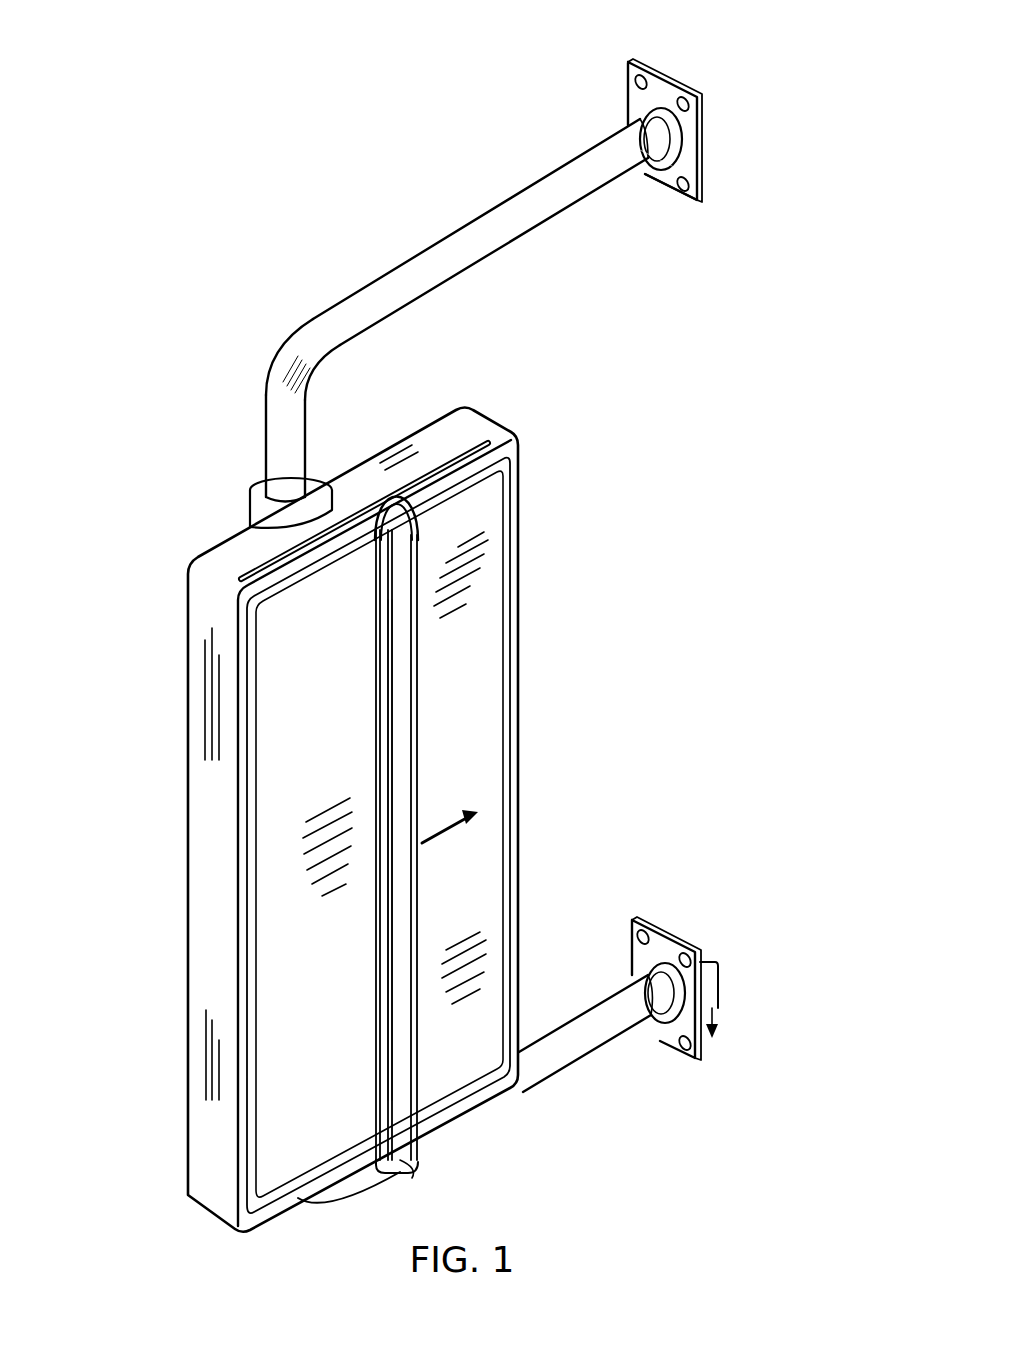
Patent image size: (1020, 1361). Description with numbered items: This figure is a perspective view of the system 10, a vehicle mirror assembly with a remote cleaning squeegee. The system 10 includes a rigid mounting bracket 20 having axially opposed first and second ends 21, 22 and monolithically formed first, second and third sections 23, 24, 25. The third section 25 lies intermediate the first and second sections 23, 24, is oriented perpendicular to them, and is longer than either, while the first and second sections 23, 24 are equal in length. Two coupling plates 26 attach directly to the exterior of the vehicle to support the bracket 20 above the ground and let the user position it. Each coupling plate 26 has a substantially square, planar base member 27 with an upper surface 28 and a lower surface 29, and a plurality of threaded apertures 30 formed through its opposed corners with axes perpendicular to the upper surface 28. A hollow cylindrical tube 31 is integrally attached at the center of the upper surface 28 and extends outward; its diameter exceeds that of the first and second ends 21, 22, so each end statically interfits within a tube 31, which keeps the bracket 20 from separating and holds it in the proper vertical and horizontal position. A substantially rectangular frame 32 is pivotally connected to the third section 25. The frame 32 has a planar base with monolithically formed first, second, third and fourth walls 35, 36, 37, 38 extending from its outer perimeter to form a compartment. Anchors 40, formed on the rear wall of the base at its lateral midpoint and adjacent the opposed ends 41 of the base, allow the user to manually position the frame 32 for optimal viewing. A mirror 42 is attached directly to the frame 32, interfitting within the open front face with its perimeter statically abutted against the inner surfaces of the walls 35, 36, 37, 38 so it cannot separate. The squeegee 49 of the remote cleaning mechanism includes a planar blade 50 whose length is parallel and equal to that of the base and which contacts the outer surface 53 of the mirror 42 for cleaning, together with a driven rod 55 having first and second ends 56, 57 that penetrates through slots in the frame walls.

The system 10 is at (158, 218).
The rigid mounting bracket 20 is at (288, 350).
The first end of bracket 21 is at (600, 152).
The second end of bracket 22 is at (615, 1027).
The first section of bracket 23 is at (446, 236).
The second section of bracket 24 is at (556, 1062).
The third section of bracket 25 is at (266, 444).
The coupling plates 26 is at (690, 147).
The base member 27 is at (700, 132).
The upper surface of base member 28 is at (622, 94).
The lower surface of base member 29 is at (684, 66).
The threaded apertures 30 is at (641, 74).
The hollow cylindrical tube 31 is at (662, 186).
The frame 32 is at (190, 1020).
The first wall 35 is at (448, 425).
The second wall 36 is at (272, 1215).
The third wall 37 is at (190, 958).
The fourth wall 38 is at (520, 790).
The anchors 40 is at (250, 512).
The opposed ends of base 41 is at (412, 432).
The mirror 42 is at (480, 708).
The squeegee 49 is at (483, 632).
The planar blade 50 is at (420, 596).
The outer surface of mirror 53 is at (474, 738).
The driven rod 55 is at (425, 515).
The first end of rod 56 is at (500, 452).
The second end of rod 57 is at (408, 1174).